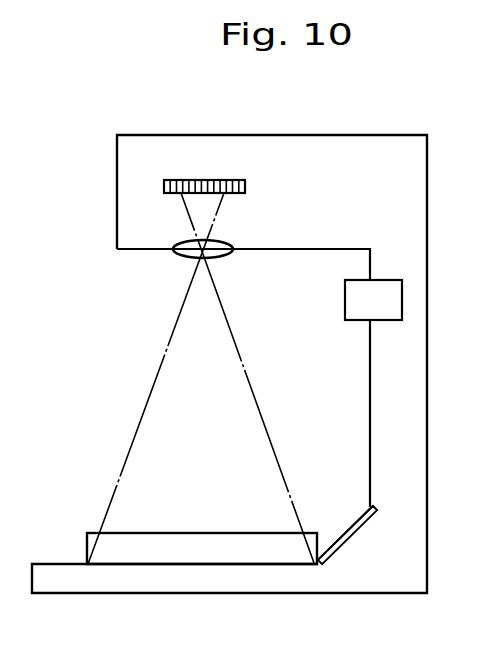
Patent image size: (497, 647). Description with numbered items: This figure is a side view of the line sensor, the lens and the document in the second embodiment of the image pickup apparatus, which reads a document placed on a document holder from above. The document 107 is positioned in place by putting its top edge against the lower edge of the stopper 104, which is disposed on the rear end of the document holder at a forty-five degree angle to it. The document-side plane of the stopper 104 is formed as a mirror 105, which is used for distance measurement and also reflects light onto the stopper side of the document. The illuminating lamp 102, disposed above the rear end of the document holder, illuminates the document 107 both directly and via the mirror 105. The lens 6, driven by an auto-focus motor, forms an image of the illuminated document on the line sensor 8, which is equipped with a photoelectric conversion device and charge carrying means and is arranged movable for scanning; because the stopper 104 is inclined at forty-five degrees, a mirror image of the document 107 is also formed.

The line sensor 8 is at (245, 183).
The lens 6 is at (180, 258).
The illuminating lamp 102 is at (392, 285).
The stopper 104 is at (358, 530).
The mirror 105 is at (343, 530).
The document 107 is at (227, 530).